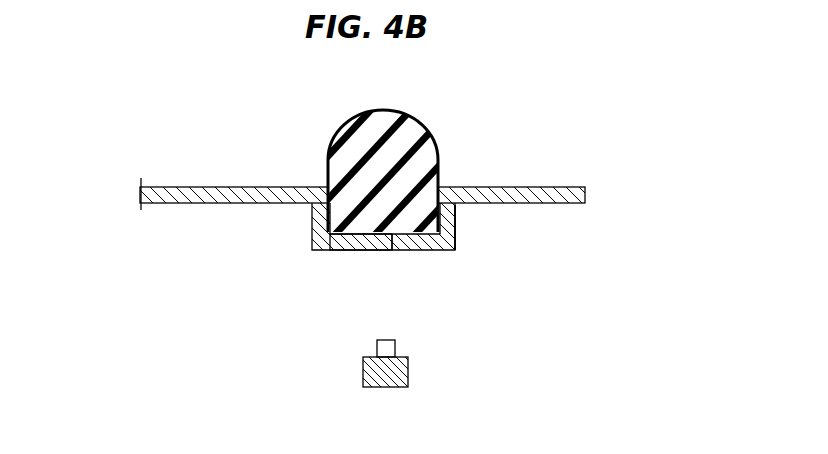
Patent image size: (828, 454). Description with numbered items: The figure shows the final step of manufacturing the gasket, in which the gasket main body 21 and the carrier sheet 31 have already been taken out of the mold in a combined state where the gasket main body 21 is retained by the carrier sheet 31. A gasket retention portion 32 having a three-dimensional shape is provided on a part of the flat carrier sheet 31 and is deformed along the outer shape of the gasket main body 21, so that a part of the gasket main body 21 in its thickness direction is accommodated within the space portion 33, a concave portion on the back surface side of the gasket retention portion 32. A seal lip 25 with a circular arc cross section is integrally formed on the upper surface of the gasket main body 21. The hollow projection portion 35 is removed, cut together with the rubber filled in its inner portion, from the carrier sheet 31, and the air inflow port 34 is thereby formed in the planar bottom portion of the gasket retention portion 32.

The gasket main body 21 is at (423, 127).
The seal lip 25 is at (378, 128).
The carrier sheet 31 is at (545, 187).
The gasket retention portion 32 is at (410, 250).
The space portion 33 is at (455, 223).
The air inflow port 34 is at (378, 250).
The hollow projection portion 35 is at (357, 375).